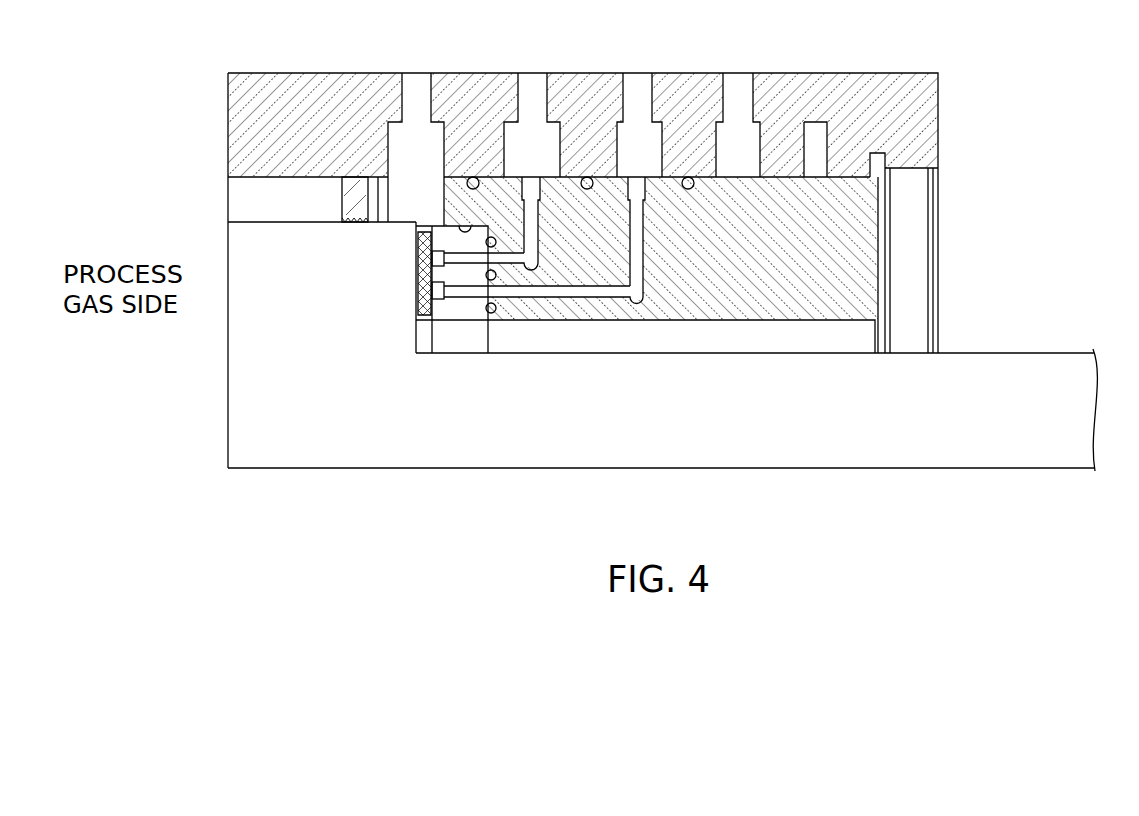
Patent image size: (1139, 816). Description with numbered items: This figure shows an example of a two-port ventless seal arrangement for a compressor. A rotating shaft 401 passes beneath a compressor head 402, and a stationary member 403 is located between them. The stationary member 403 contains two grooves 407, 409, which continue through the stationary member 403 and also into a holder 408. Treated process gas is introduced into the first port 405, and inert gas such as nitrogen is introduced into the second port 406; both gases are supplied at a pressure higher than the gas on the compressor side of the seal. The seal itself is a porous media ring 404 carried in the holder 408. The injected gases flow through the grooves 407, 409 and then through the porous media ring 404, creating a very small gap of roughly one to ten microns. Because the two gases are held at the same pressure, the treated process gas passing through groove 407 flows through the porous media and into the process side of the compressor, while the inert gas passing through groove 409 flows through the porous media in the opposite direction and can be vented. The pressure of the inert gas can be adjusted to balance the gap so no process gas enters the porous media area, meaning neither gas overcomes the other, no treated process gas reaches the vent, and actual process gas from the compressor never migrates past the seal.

The rotating shaft 401 is at (1037, 353).
The compressor head 402 is at (912, 73).
The stationary member 403 is at (875, 249).
The porous media ring 404 is at (416, 264).
The port 405 is at (531, 73).
The port 406 is at (641, 73).
The groove 407 is at (524, 235).
The holder 408 is at (448, 309).
The groove 409 is at (473, 298).